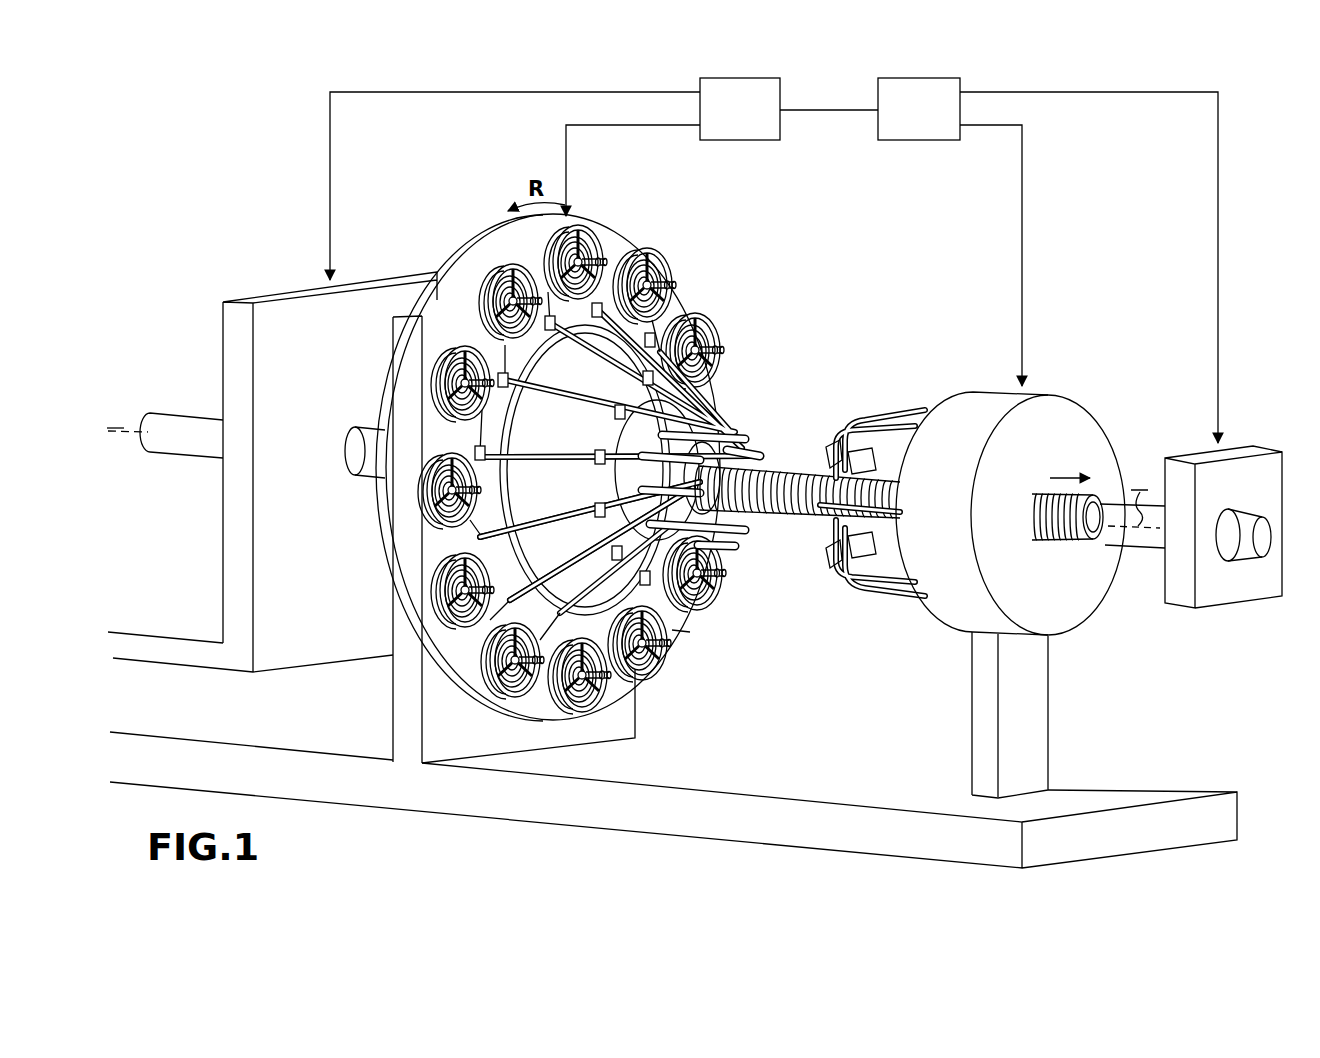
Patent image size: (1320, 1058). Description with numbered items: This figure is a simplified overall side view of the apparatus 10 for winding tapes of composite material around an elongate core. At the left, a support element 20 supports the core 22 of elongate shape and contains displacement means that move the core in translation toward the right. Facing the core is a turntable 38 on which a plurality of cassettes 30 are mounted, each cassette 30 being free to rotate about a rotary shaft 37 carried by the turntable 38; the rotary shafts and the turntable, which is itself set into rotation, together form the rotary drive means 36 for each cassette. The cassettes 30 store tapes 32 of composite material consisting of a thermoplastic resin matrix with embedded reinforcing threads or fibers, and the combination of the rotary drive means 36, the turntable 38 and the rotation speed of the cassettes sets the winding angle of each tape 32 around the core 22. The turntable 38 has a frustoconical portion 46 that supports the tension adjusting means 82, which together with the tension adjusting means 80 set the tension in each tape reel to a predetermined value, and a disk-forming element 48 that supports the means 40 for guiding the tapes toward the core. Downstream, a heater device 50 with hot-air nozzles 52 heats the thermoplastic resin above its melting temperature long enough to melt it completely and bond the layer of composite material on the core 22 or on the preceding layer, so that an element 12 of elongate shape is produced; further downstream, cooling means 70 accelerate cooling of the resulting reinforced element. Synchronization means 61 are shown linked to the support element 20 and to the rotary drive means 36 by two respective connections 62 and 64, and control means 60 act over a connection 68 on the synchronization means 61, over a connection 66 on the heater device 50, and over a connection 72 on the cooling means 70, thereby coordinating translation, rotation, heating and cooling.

The apparatus 10 is at (773, 740).
The element of elongate shape 12 is at (1077, 542).
The support element 20 is at (221, 358).
The core of elongate shape 22 is at (185, 440).
The cassette 30 is at (488, 256).
The tape 32 is at (548, 537).
The rotary drive means 36 is at (410, 662).
The rotary shaft 37 is at (672, 655).
The turntable 38 is at (445, 312).
The means for guiding the tapes 40 is at (768, 446).
The frustoconical portion 46 is at (611, 390).
The disk-forming element 48 is at (717, 414).
The heater device 50 is at (1097, 408).
The nozzle 52 is at (834, 457).
The control means 60 is at (932, 122).
The synchronization means 61 is at (753, 122).
The connection 62 is at (330, 150).
The connection 64 is at (566, 150).
The connection 66 is at (1022, 258).
The connection 68 is at (828, 110).
The cooling means 70 is at (1232, 590).
The connection 72 is at (1218, 258).
The tension adjusting means 80 is at (487, 455).
The tension adjusting means 82 is at (612, 416).